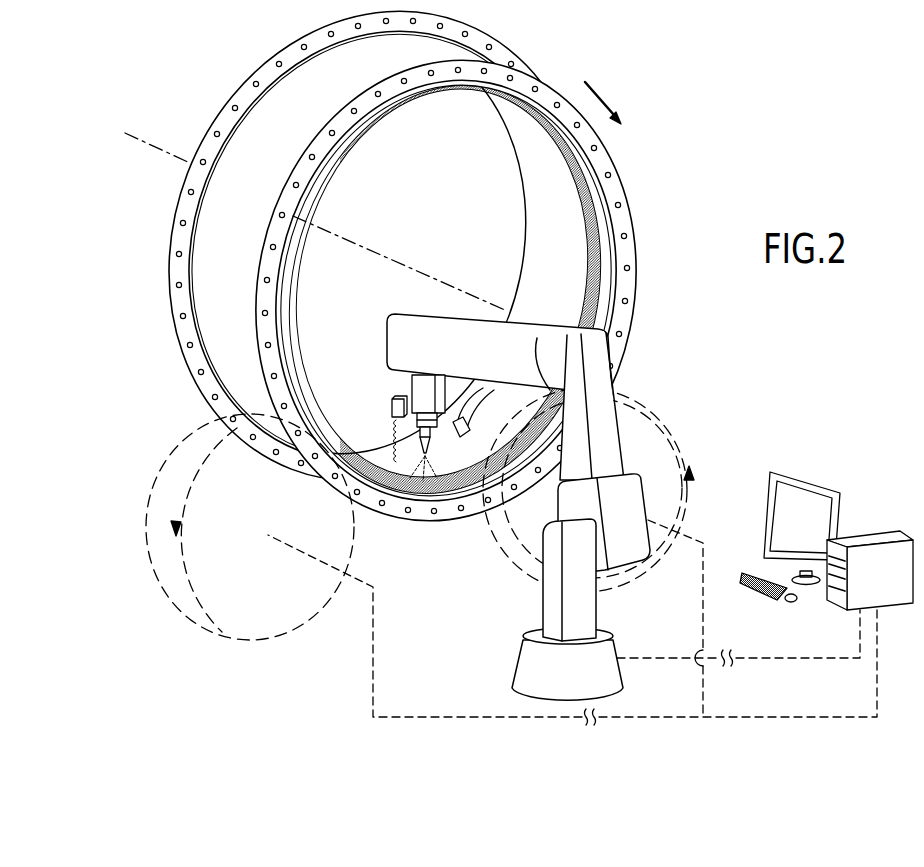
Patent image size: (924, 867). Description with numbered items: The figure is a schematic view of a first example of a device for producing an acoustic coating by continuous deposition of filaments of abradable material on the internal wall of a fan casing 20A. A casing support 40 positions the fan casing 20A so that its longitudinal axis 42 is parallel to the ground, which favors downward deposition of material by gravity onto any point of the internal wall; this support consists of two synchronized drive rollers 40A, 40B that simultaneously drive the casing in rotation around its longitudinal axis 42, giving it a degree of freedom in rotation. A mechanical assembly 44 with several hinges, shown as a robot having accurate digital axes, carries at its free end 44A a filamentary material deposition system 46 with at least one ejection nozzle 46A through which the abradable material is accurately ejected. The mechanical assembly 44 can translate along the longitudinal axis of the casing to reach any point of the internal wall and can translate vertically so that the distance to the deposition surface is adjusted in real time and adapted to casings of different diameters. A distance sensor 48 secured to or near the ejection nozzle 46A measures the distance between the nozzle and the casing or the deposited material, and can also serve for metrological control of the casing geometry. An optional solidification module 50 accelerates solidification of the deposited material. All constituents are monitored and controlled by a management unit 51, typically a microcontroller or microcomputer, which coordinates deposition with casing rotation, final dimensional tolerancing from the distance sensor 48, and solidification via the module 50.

The fan casing 20A is at (238, 272).
The longitudinal axis 42 is at (373, 249).
The mechanical assembly 44 is at (495, 496).
The free end 44A is at (407, 367).
The filamentary material deposition system 46 is at (414, 425).
The ejection nozzle 46A is at (427, 437).
The distance sensor 48 is at (391, 406).
The solidification module 50 is at (466, 428).
The casing support 40 is at (382, 532).
The drive roller 40A is at (286, 617).
The drive roller 40B is at (663, 447).
The management unit 51 is at (876, 494).